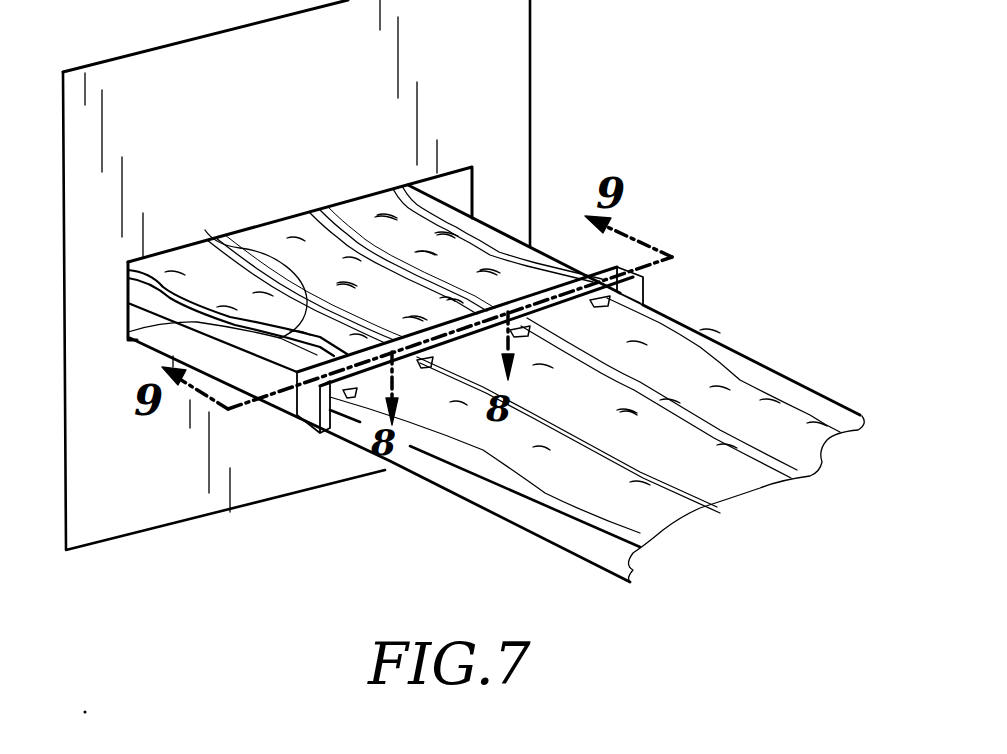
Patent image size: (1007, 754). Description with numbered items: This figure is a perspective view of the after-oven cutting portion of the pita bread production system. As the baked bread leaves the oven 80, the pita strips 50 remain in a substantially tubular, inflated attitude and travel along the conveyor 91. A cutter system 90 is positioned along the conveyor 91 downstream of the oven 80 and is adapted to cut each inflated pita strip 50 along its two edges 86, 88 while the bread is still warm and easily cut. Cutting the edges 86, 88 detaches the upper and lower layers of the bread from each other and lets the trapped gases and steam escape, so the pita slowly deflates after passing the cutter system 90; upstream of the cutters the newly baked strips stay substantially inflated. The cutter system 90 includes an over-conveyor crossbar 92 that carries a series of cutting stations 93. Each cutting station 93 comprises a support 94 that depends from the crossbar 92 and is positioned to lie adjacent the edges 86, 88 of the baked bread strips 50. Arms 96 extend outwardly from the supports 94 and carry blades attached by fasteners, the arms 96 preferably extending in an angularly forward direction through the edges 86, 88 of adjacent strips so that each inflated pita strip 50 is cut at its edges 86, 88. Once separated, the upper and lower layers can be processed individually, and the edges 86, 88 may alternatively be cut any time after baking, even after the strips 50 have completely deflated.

The oven 80 is at (286, 101).
The edge 86 is at (128, 332).
The pita strip 50 is at (267, 238).
The edge 88 is at (205, 230).
The cutter system 90 is at (521, 298).
The conveyor 91 is at (453, 465).
The over-conveyor crossbar 92 is at (643, 297).
The cutting station 93 is at (527, 349).
The support 94 is at (643, 304).
The arm 96 is at (600, 305).